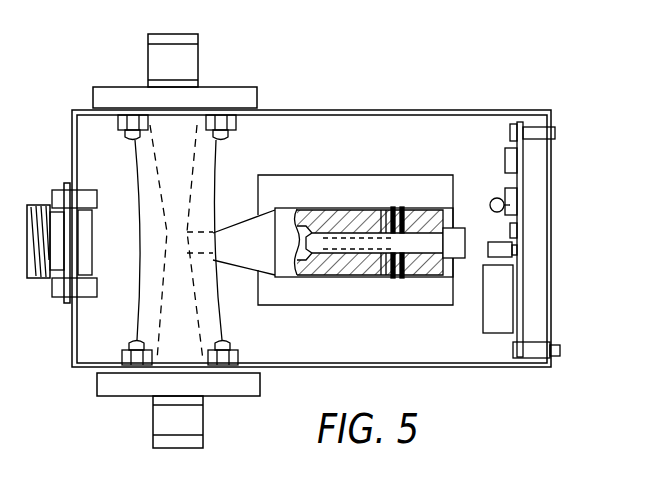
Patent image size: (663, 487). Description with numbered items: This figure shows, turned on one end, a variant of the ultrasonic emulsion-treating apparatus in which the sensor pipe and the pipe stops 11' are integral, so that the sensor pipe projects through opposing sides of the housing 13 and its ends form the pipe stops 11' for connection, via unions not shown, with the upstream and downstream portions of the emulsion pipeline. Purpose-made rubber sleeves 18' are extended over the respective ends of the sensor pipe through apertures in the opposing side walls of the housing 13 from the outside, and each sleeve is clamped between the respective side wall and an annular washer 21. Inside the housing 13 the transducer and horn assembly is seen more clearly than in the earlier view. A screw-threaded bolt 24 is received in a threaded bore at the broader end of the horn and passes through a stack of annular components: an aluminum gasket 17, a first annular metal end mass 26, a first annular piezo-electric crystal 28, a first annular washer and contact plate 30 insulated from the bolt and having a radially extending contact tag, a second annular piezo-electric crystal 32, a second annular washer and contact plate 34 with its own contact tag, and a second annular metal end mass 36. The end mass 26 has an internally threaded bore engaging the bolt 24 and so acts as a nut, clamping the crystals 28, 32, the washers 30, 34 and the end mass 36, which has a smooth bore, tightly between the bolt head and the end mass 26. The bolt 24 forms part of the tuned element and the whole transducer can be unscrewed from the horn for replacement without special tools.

The pipe stops 11' is at (129, 244).
The housing 13 is at (340, 238).
The aluminum gasket 17 is at (340, 209).
The rubber sleeves 18' is at (121, 245).
The annular washer 21 is at (237, 87).
The screw-threaded bolt 24 is at (455, 260).
The first annular metal end mass 26 is at (360, 209).
The first annular piezo-electric crystal 28 is at (388, 208).
The first annular washer and contact plate 30 is at (386, 280).
The second annular piezo-electric crystal 32 is at (402, 208).
The second annular washer and contact plate 34 is at (402, 280).
The second annular metal end mass 36 is at (447, 209).